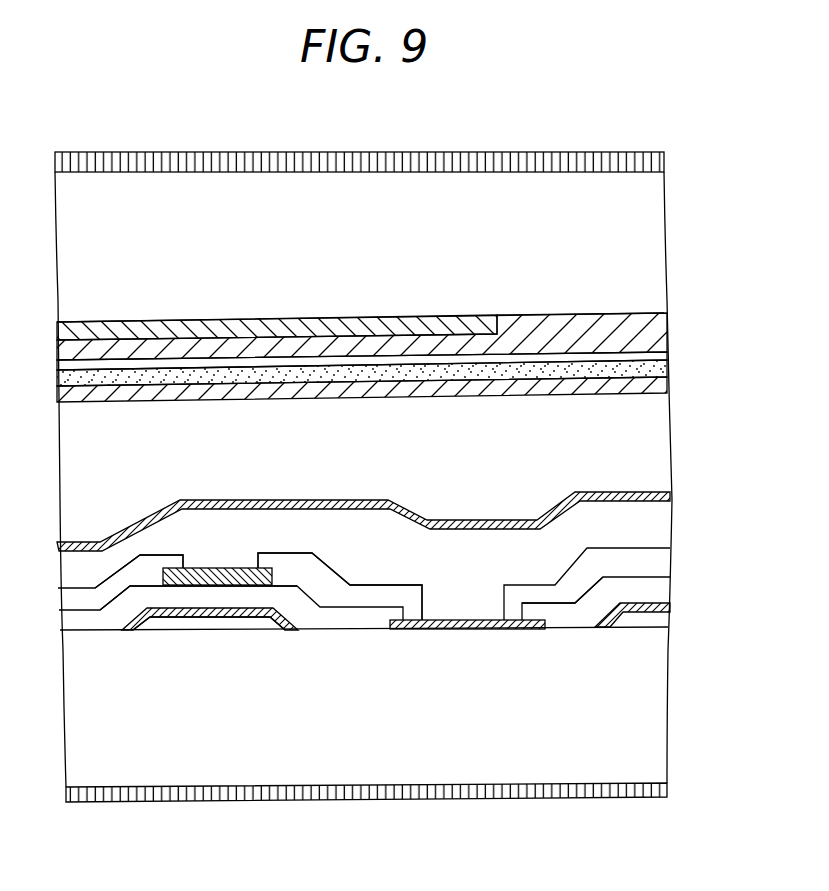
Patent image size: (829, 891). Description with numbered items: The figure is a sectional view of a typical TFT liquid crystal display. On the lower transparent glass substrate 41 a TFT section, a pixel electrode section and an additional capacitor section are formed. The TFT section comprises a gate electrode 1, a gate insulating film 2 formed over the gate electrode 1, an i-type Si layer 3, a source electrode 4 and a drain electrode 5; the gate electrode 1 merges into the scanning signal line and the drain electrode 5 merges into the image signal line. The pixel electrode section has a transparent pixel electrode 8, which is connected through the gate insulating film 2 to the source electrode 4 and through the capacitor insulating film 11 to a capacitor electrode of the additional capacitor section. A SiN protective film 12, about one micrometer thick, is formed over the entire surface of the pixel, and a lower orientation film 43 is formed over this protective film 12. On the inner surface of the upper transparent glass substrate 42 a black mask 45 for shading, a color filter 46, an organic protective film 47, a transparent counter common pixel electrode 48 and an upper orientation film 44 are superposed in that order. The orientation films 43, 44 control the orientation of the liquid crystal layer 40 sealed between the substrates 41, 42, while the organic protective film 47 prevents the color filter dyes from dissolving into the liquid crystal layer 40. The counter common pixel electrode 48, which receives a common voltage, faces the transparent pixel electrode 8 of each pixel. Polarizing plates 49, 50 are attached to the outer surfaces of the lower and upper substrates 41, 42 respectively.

The gate electrode 1 is at (254, 622).
The gate insulating film 2 is at (217, 704).
The i-type Si layer 3 is at (232, 570).
The source electrode 4 is at (318, 566).
The drain electrode 5 is at (166, 563).
The transparent pixel electrode 8 is at (467, 620).
The capacitor insulating film 11 is at (635, 682).
The protective film 12 is at (332, 520).
The liquid crystal layer 40 is at (657, 428).
The lower transparent glass substrate 41 is at (652, 738).
The upper transparent glass substrate 42 is at (655, 282).
The lower orientation film 43 is at (228, 500).
The upper orientation film 44 is at (447, 400).
The black mask 45 is at (366, 327).
The color filter 46 is at (566, 327).
The organic protective film 47 is at (672, 360).
The transparent counter common pixel electrode 48 is at (565, 378).
The polarizing plate 49 is at (648, 800).
The polarizing plate 50 is at (514, 152).